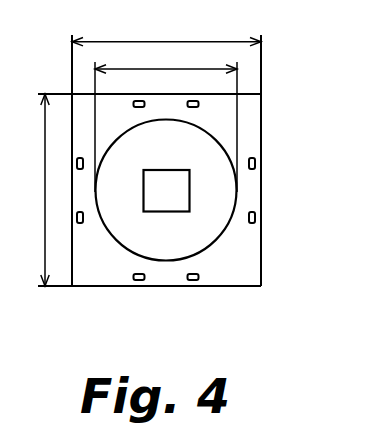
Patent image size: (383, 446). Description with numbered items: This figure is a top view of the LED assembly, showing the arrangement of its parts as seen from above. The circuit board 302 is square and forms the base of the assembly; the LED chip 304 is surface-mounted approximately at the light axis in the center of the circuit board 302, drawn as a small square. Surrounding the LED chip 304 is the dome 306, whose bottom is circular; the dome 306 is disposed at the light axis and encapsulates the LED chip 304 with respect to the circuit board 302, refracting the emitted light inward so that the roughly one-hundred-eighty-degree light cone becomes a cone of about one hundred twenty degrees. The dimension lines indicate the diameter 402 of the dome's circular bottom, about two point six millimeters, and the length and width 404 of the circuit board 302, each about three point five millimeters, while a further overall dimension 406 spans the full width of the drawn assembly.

The circuit board 302 is at (167, 286).
The LED chip 304 is at (189, 196).
The dome 306 is at (119, 243).
The diameter 402 is at (166, 119).
The length and width 404 is at (30, 190).
The outer width dimension 406 is at (166, 31).